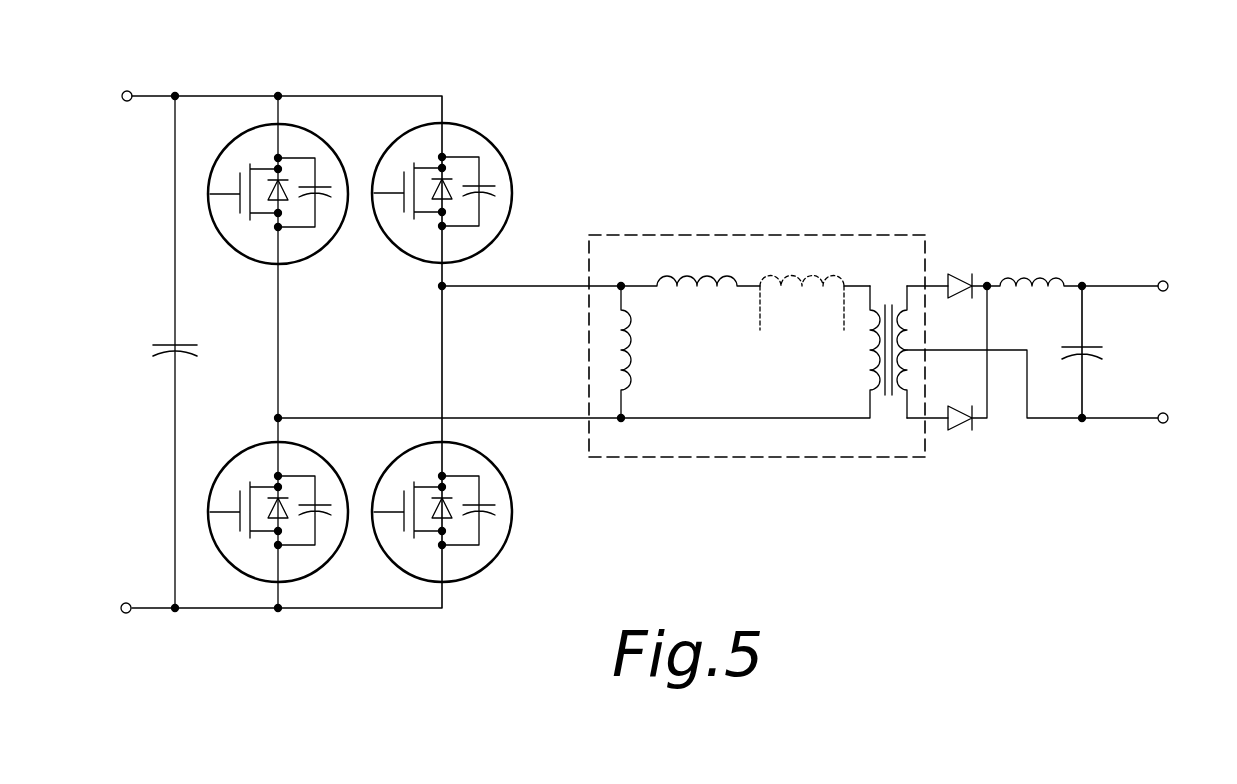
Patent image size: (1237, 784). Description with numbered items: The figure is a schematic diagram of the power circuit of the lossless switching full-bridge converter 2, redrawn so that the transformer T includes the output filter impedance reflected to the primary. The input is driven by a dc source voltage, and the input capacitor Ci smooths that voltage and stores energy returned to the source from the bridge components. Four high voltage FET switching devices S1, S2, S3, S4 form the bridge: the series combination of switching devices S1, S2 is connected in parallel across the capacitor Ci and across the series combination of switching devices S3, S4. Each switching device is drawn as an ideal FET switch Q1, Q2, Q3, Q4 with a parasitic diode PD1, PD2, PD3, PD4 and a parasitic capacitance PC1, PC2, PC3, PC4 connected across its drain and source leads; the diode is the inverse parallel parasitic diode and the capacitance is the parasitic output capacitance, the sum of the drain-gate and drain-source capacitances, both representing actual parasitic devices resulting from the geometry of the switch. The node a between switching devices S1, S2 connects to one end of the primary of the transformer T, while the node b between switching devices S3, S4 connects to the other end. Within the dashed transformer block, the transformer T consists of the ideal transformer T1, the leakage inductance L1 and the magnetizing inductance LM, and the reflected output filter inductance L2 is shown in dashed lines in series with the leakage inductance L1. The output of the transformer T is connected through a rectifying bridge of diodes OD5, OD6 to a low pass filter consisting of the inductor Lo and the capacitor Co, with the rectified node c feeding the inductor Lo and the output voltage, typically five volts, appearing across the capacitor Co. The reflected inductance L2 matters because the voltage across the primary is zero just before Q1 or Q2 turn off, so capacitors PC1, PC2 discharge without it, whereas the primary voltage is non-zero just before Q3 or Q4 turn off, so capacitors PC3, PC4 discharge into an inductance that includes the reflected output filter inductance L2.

The lossless switching full-bridge converter 2 is at (943, 149).
The switching device S1 is at (278, 188).
The switching device S2 is at (278, 506).
The switching device S3 is at (442, 187).
The switching device S4 is at (442, 506).
The ideal FET switch Q1 is at (244, 179).
The ideal FET switch Q2 is at (244, 497).
The ideal FET switch Q3 is at (408, 178).
The ideal FET switch Q4 is at (408, 497).
The parasitic diode PD1 is at (261, 216).
The parasitic diode PD2 is at (261, 534).
The parasitic diode PD3 is at (425, 215).
The parasitic diode PD4 is at (425, 534).
The parasitic capacitance PC1 is at (304, 205).
The parasitic capacitor PC2 is at (304, 523).
The parasitic capacitor PC3 is at (468, 204).
The parasitic capacitor PC4 is at (468, 523).
The input capacitor Ci is at (159, 354).
The node connection a is at (438, 409).
The node b is at (520, 285).
The node c is at (979, 267).
The transformer T is at (757, 350).
The magnetizing inductance LM is at (639, 352).
The leakage inductance L1 is at (690, 266).
The reflected output filter inductance L2 is at (815, 288).
The ideal transformer T1 is at (764, 352).
The diode OD5 is at (962, 295).
The diode OD6 is at (962, 368).
The inductor Lo is at (1034, 266).
The capacitor Co is at (1095, 352).